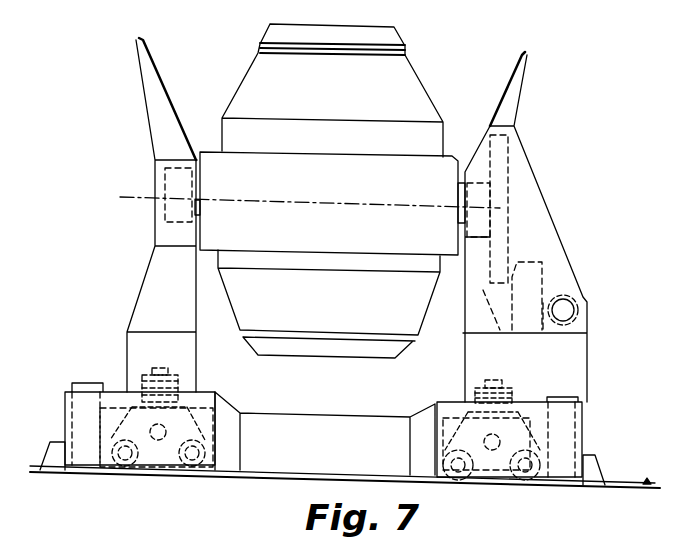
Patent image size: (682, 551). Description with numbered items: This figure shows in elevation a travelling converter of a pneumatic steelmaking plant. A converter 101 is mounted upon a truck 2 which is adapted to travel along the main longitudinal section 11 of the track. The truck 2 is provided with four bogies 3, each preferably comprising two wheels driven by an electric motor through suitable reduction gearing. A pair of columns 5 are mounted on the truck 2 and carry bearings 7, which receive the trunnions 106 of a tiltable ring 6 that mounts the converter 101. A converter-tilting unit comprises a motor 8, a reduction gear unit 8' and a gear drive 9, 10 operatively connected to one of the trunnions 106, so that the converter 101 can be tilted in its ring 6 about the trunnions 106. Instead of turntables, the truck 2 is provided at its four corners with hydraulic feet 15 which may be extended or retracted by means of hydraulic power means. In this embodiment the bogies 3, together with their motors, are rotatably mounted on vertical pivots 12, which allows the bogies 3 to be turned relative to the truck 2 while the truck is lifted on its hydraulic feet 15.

The truck 2 is at (270, 451).
The bogie 3 is at (160, 445).
The column 5 is at (152, 300).
The tiltable ring 6 is at (248, 175).
The bearing 7 is at (157, 182).
The motor 8 is at (582, 282).
The reduction gear unit 8' is at (577, 271).
The gear drive 9 is at (507, 203).
The gear drive 10 is at (527, 262).
The main longitudinal section 11 is at (645, 487).
The vertical pivot 12 is at (500, 378).
The hydraulic foot 15 is at (87, 420).
The converter 101 is at (413, 95).
The trunnion 106 is at (199, 207).